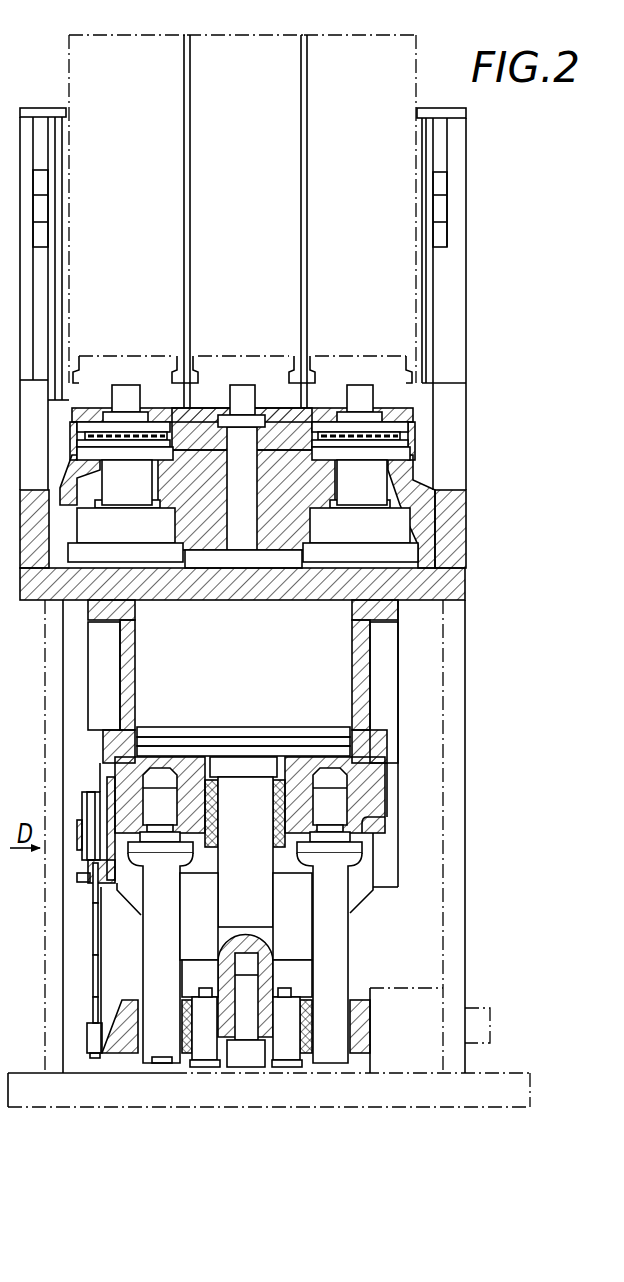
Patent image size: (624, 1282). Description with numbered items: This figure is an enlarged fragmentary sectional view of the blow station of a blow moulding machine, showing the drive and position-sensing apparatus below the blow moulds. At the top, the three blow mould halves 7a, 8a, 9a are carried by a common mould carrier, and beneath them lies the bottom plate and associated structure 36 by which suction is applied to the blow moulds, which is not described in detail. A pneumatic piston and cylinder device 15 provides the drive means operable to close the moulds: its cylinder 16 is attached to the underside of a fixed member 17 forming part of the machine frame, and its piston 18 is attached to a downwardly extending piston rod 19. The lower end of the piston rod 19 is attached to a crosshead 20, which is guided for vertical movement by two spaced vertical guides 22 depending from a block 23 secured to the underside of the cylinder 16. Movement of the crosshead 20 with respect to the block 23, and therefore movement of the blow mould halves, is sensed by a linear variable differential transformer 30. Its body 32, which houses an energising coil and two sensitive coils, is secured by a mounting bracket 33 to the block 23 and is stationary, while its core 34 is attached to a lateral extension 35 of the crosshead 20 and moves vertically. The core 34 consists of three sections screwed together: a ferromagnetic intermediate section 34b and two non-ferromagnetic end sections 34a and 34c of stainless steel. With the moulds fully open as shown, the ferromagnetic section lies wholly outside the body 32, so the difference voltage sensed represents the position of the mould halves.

The blow mould half 7a is at (120, 65).
The blow mould half 8a is at (237, 65).
The blow mould half 9a is at (355, 65).
The bottom plate and associated structure 36 is at (418, 438).
The fixed member 17 is at (450, 587).
The cylinder 16 is at (360, 650).
The pneumatic piston and cylinder device 15 is at (372, 697).
The piston 18 is at (235, 740).
The block 23 is at (370, 795).
The vertical guides 22 is at (153, 957).
The piston rod 19 is at (228, 903).
The crosshead 20 is at (358, 997).
The mounting bracket 33 is at (107, 783).
The body 32 is at (83, 803).
The linear variable differential transformer 30 is at (73, 862).
The core 34 is at (92, 935).
The end section 34a is at (92, 903).
The intermediate section 34b is at (92, 955).
The end section 34c is at (92, 997).
The lateral extension 35 is at (113, 1052).